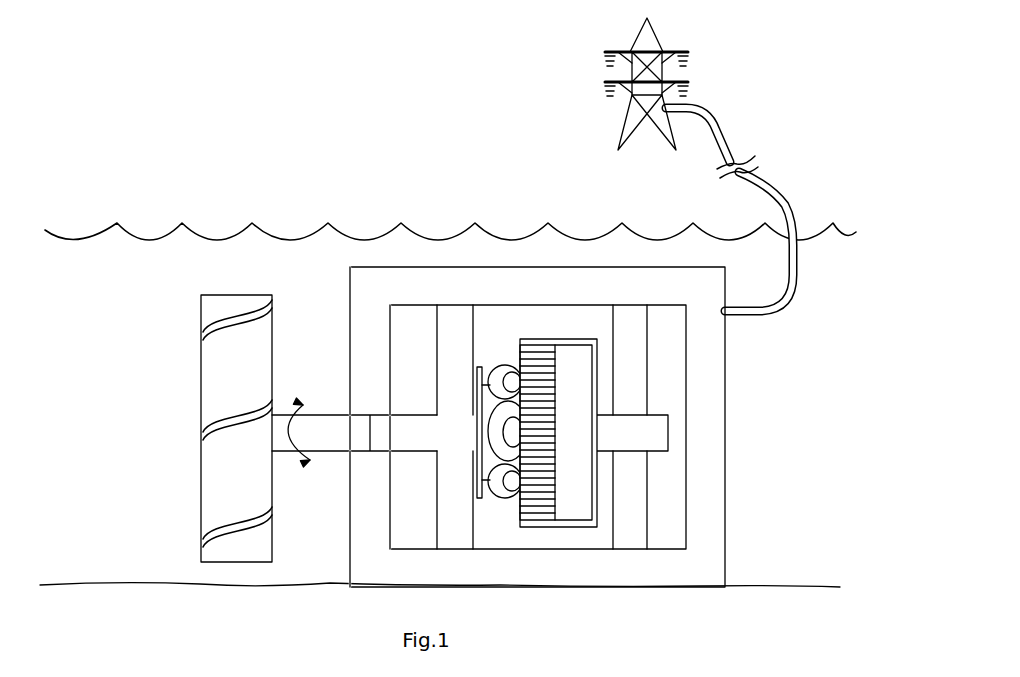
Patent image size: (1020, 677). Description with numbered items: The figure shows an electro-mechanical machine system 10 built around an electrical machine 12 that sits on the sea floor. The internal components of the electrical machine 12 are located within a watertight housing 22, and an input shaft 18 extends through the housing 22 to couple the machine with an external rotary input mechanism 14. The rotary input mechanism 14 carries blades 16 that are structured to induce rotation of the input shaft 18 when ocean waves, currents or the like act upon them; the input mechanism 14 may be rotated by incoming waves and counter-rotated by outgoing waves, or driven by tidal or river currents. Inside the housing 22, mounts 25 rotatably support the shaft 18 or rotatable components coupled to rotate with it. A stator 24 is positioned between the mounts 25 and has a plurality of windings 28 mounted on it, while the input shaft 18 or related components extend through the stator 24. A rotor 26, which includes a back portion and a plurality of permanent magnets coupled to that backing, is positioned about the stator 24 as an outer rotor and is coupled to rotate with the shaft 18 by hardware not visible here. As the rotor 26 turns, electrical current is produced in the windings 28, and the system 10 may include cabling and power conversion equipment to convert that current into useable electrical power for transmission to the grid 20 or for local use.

The electro-mechanical machine system 10 is at (145, 396).
The electrical machine 12 is at (711, 400).
The rotary input mechanism 14 is at (201, 303).
The blades 16 is at (255, 324).
The input shaft 18 is at (333, 443).
The grid 20 is at (611, 109).
The watertight housing 22 is at (717, 340).
The stator 24 is at (488, 460).
The mounts 25 is at (445, 340).
The rotor 26 is at (560, 523).
The windings 28 is at (507, 366).